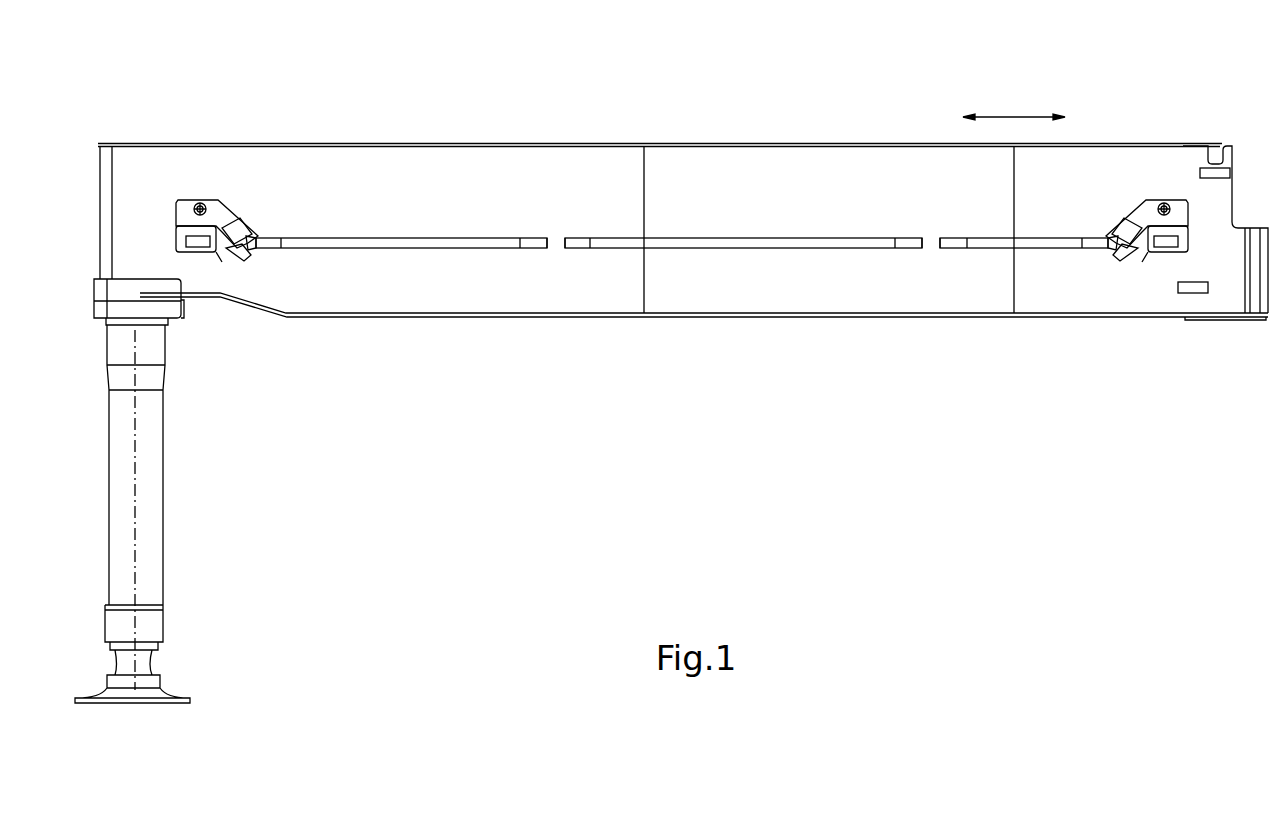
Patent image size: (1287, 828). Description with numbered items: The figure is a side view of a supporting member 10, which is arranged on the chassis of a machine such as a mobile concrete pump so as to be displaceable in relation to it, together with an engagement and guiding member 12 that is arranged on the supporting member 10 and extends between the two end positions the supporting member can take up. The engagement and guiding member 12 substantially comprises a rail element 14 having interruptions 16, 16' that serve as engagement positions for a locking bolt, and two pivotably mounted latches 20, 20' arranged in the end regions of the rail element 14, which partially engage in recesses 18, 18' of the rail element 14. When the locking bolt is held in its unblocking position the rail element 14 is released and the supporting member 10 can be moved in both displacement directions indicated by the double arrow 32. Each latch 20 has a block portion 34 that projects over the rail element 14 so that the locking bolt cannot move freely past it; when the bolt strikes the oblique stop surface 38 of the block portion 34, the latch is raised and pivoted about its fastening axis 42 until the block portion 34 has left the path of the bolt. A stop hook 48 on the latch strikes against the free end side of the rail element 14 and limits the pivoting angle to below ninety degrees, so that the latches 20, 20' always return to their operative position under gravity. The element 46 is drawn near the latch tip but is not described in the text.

The supporting member 10 is at (624, 136).
The engagement and guiding member 12 is at (706, 303).
The rail element 14 is at (198, 248).
The interruption 16 is at (569, 268).
The interruption 16' is at (939, 270).
The recess 18 is at (254, 271).
The recess 18' is at (1121, 306).
The latch 20 is at (236, 204).
The latch 20' is at (1147, 202).
The double arrow 32 is at (1012, 110).
The block portion 34 is at (225, 232).
The oblique stop surface 38 is at (220, 240).
The fastening axis 42 is at (200, 203).
The lever tip 46 is at (252, 234).
The stop hook 48 is at (176, 228).